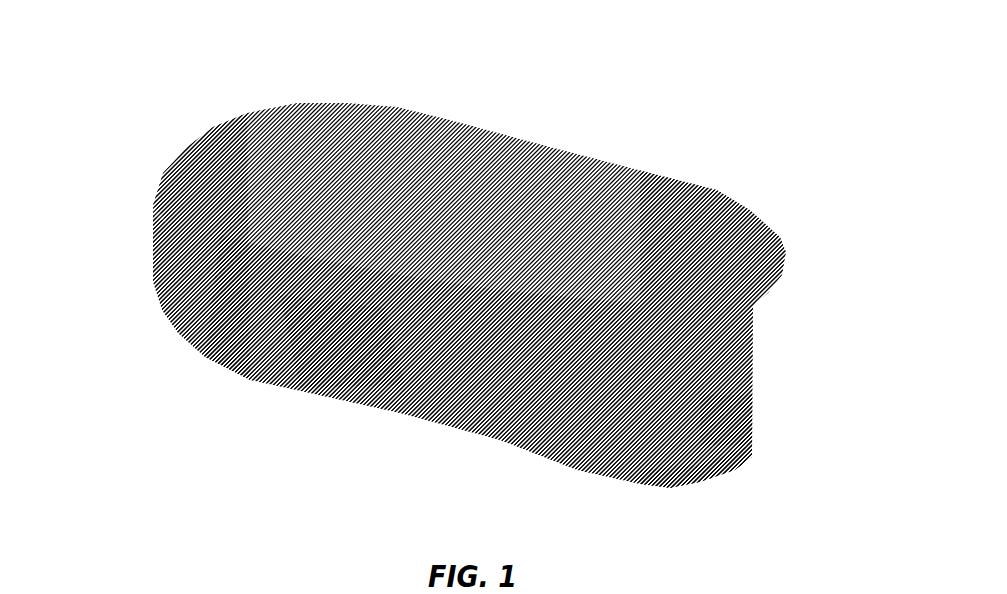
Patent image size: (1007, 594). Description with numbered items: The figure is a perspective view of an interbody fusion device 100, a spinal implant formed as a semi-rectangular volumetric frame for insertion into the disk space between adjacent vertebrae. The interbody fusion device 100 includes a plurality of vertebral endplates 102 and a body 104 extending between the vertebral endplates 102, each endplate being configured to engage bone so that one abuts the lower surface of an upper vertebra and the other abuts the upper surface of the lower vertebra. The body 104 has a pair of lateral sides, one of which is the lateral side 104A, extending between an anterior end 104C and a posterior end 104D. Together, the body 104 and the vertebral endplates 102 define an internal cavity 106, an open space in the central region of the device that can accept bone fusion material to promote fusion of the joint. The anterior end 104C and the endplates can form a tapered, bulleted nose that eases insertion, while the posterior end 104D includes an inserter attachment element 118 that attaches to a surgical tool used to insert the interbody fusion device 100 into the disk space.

The interbody fusion device 100 is at (170, 90).
The vertebral endplate 102 is at (281, 102).
The body 104 is at (179, 288).
The lateral side 104A is at (407, 356).
The anterior end 104C is at (112, 227).
The posterior end 104D is at (814, 338).
The internal cavity 106 is at (315, 305).
The inserter attachment element 118 is at (740, 414).